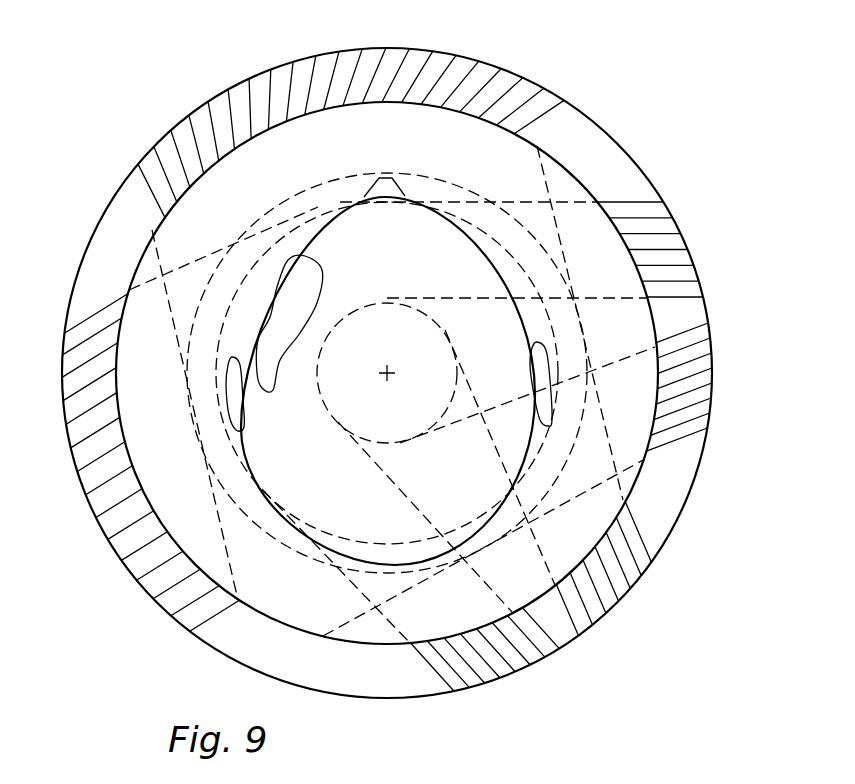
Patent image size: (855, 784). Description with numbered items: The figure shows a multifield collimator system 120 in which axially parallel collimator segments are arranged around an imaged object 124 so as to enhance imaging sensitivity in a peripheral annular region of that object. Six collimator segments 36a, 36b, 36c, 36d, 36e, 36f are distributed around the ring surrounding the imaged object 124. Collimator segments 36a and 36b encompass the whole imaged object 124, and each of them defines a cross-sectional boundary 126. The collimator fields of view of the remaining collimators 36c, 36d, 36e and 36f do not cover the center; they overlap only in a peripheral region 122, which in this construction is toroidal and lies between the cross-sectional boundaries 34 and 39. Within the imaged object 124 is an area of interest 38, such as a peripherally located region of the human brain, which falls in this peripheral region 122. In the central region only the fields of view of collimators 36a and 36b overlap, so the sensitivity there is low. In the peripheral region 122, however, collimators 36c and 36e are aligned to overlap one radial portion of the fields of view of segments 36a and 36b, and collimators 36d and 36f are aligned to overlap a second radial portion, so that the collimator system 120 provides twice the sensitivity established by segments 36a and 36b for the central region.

The collimator system 120 is at (387, 356).
The peripheral region 122 is at (389, 371).
The imaged object 124 is at (478, 235).
The cross-sectional boundary 126 is at (296, 552).
The cross-sectional boundary 34 is at (304, 521).
The area of interest 38 is at (308, 268).
The cross-sectional boundary 39 is at (323, 357).
The collimator segment 36a is at (363, 50).
The collimator segment 36b is at (97, 514).
The collimator segment 36c is at (488, 682).
The collimator segment 36d is at (616, 592).
The collimator segment 36e is at (716, 380).
The collimator segment 36f is at (686, 243).